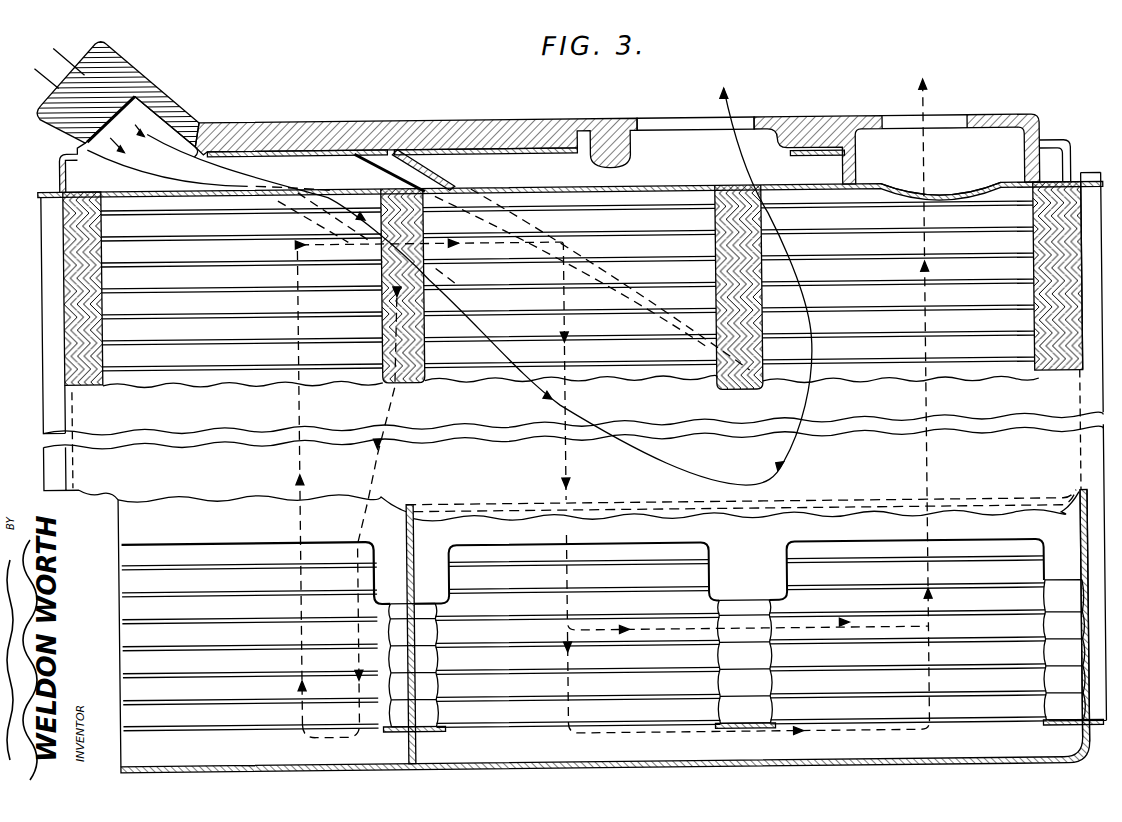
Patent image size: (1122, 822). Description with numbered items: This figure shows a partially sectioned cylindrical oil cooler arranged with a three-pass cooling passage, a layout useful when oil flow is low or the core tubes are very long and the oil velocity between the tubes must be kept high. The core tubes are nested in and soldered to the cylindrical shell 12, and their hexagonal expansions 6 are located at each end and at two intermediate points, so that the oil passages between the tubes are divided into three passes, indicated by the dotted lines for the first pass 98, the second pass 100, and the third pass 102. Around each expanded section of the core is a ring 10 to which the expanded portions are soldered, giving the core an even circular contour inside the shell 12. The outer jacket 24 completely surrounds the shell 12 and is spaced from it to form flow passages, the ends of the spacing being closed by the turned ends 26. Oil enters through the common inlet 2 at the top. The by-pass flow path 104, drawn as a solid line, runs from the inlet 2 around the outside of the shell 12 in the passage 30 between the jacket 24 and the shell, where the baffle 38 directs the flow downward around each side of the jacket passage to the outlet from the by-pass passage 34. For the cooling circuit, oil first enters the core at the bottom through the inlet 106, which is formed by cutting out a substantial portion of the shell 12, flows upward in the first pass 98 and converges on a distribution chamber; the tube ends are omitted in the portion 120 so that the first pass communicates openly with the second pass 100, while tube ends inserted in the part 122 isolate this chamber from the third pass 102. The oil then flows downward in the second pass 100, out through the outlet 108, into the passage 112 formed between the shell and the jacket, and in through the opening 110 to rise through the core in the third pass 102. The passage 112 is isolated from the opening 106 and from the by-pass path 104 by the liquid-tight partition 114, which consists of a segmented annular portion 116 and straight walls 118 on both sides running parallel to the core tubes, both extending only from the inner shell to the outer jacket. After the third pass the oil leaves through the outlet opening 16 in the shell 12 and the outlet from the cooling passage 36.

The oil inlet 2 is at (90, 62).
The hexagonal expansions 6 is at (438, 277).
The ring 10 is at (42, 206).
The cylindrical shell 12 is at (103, 191).
The outlet opening 16 is at (917, 199).
The outer jacket 24 is at (538, 158).
The turned ends 26 is at (1087, 737).
The upper portion of jacket chamber 30 is at (357, 167).
The outlet from by-pass passage 34 is at (663, 126).
The outlet from cooling passage 36 is at (897, 130).
The baffle 38 is at (440, 180).
The first pass 98 is at (301, 460).
The second pass 100 is at (568, 478).
The third pass 102 is at (928, 476).
The by-pass flow path 104 is at (282, 179).
The inlet 106 is at (180, 740).
The outlet opening from second pass 108 is at (678, 551).
The inlet opening to third pass 110 is at (862, 552).
The passage 112 is at (495, 766).
The liquid-tight partition 114 is at (400, 748).
The segmented annular portion 116 is at (414, 746).
The straight walls 118 is at (517, 509).
The portion with omitted tube ends 120 is at (466, 209).
The part with inserted tube ends 122 is at (710, 214).